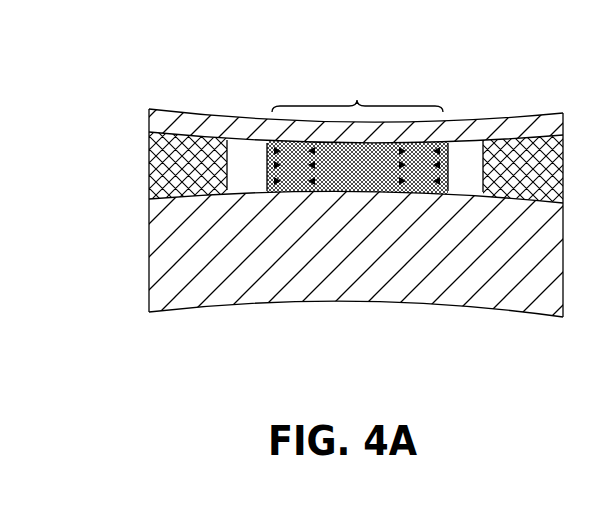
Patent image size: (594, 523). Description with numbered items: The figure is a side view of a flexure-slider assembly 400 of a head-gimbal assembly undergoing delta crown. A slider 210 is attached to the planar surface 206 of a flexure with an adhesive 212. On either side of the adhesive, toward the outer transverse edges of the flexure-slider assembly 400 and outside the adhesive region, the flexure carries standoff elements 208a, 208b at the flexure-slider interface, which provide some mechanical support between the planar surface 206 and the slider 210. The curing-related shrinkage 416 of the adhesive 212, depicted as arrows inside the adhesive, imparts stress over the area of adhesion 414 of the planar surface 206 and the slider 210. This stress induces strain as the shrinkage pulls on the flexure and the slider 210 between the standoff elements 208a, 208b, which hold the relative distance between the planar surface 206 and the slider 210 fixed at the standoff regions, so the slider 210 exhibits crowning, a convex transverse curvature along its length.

The flexure-slider assembly 400 is at (285, 55).
The planar surface 206 is at (477, 135).
The standoff element 208a is at (201, 110).
The standoff element 208b is at (545, 113).
The slider 210 is at (163, 229).
The adhesive 212 is at (358, 193).
The area of adhesion 414 is at (357, 92).
The curing-related shrinkage 416 is at (287, 193).